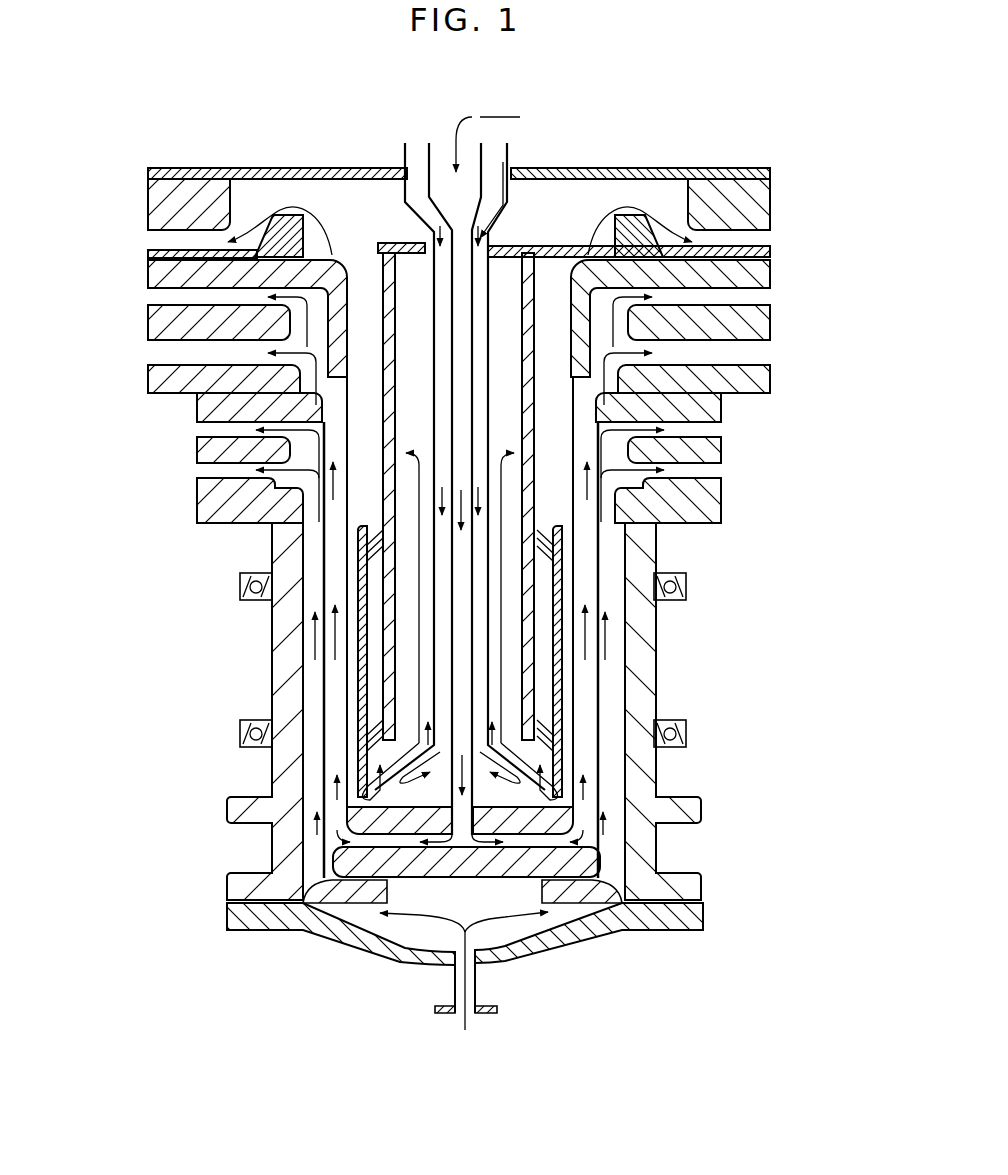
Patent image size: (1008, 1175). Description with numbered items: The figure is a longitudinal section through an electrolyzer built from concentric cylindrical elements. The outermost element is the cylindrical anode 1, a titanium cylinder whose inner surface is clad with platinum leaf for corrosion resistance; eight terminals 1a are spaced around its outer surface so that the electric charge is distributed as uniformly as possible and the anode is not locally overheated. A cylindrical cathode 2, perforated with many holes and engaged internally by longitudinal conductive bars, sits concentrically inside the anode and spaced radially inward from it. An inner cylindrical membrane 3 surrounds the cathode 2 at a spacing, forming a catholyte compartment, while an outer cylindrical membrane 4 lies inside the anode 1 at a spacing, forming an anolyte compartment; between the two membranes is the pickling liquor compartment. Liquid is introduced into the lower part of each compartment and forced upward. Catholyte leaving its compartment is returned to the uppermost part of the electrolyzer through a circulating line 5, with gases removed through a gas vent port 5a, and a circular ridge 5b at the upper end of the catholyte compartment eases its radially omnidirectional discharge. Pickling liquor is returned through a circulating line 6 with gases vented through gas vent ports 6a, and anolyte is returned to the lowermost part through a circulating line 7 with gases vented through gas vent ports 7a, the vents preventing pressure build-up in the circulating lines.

The cylindrical anode 1 is at (653, 675).
The terminals 1a is at (688, 573).
The cylindrical cathode 2 is at (565, 683).
The inner cylindrical membrane 3 is at (360, 567).
The outer cylindrical membrane 4 is at (323, 687).
The circulating line 5 is at (400, 138).
The gas vent port 5a is at (340, 170).
The circular ridge 5b is at (290, 222).
The circulating line 6 is at (490, 117).
The gas vent ports 6a is at (165, 297).
The circulating line 7 is at (200, 471).
The gas vent ports 7a is at (200, 430).